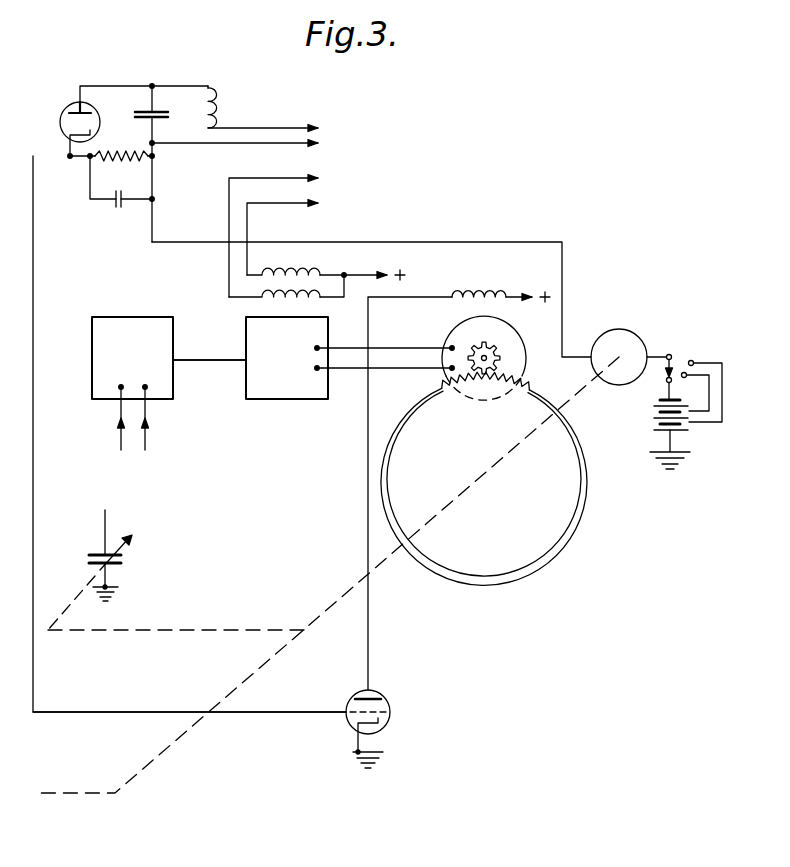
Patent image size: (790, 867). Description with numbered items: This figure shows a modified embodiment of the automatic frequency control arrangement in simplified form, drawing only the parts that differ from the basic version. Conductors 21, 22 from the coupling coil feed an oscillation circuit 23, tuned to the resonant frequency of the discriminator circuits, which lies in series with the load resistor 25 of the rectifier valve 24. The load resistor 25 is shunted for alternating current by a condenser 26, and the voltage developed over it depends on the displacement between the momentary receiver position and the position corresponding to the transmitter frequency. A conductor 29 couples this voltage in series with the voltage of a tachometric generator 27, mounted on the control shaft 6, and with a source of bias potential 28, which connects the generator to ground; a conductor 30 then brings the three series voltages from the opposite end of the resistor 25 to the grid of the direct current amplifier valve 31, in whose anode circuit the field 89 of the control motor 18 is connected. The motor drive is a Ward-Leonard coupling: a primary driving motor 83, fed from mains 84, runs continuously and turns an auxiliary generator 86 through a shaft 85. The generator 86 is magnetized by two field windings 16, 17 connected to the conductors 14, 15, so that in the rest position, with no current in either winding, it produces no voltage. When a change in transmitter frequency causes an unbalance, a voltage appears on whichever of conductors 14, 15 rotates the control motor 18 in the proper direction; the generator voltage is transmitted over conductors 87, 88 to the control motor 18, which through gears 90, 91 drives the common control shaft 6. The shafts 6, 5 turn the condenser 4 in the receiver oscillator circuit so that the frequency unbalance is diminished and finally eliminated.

The condenser 4 is at (96, 552).
The shaft 5 is at (177, 630).
The control shaft 6 is at (382, 562).
The conductor 14 is at (289, 232).
The conductor 15 is at (247, 258).
The field winding 16 is at (322, 270).
The field winding 17 is at (310, 300).
The control motor 18 is at (467, 331).
The conductor 21 is at (251, 142).
The conductor 22 is at (281, 127).
The oscillation circuit 23 is at (194, 114).
The rectifier valve 24 is at (69, 108).
The load resistor 25 is at (114, 151).
The condenser 26 is at (117, 199).
The tachometric generator 27 is at (638, 339).
The source of bias potential 28 is at (655, 407).
The conductor 29 is at (379, 243).
The conductor 30 is at (270, 712).
The direct current amplifier valve 31 is at (390, 701).
The primary driving motor 83 is at (92, 334).
The mains 84 is at (121, 445).
The shaft 85 is at (237, 364).
The auxiliary generator 86 is at (290, 400).
The conductor 87 is at (400, 346).
The conductor 88 is at (421, 372).
The field 89 is at (495, 291).
The gear 90 is at (493, 349).
The gear 91 is at (563, 528).